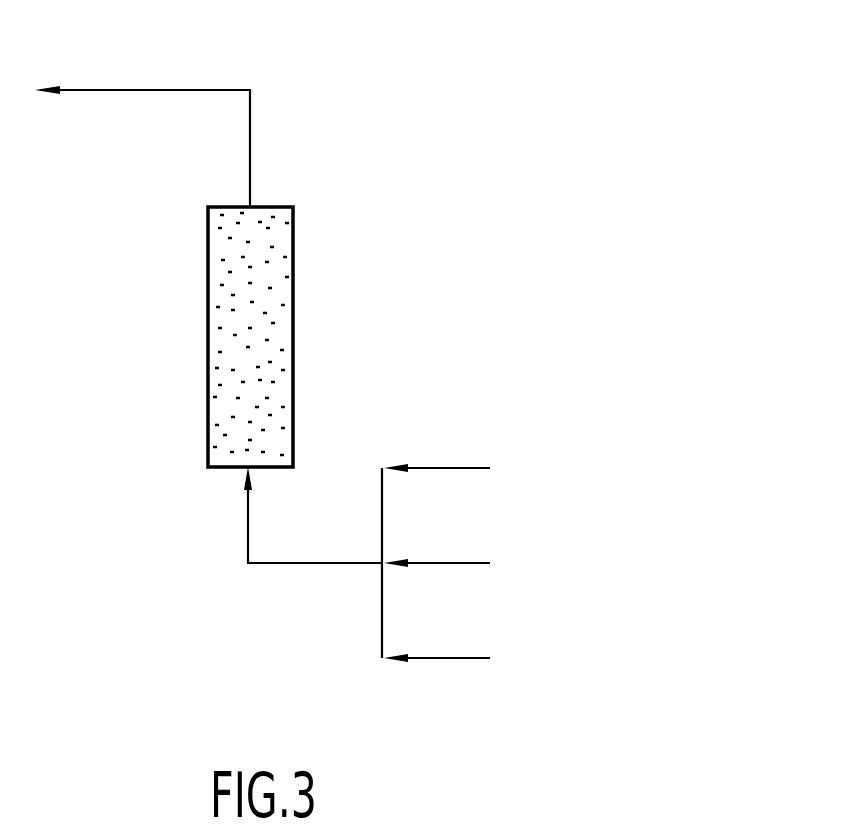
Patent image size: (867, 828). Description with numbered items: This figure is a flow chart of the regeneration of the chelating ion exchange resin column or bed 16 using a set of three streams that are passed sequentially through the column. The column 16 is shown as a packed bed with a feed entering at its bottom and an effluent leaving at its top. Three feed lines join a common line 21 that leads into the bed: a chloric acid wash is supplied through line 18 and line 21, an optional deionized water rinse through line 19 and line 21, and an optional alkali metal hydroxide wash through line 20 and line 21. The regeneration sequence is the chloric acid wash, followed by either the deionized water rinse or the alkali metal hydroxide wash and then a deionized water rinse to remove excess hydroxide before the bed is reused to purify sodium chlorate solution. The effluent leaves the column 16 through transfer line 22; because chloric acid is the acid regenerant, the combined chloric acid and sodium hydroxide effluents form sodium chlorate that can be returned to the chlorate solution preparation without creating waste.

The chelating ion exchange resin column 16 is at (208, 336).
The chloric acid line 18 is at (437, 466).
The deionized water line 19 is at (445, 561).
The alkali metal hydroxide line 20 is at (440, 656).
The common feed line 21 is at (293, 564).
The transfer line 22 is at (133, 88).